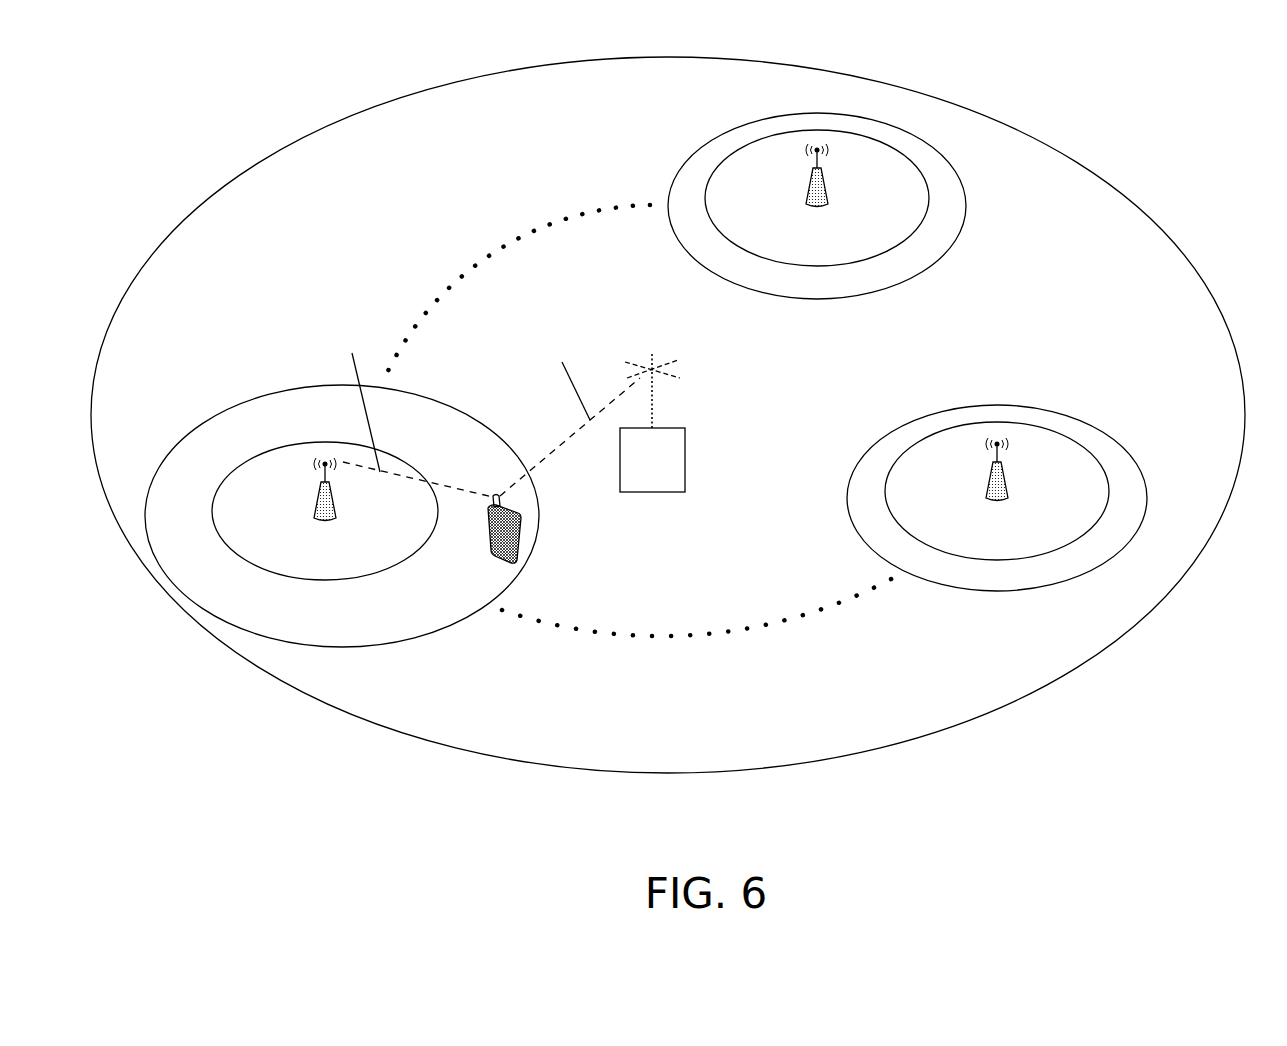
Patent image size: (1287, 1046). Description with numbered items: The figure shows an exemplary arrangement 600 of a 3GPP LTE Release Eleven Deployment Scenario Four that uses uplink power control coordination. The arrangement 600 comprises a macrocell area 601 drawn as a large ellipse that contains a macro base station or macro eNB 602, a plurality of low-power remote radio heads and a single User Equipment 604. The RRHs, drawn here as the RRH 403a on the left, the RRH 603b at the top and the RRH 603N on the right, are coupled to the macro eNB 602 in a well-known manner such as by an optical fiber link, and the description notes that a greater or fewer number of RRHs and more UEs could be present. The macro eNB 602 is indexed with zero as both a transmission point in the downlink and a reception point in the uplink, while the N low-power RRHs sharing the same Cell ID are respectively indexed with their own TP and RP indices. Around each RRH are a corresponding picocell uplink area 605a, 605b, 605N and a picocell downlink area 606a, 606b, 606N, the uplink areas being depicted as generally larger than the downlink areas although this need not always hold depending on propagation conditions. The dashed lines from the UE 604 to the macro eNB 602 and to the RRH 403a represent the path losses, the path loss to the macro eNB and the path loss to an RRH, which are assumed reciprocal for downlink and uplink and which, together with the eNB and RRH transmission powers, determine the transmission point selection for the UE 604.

The arrangement 600 is at (178, 86).
The macrocell area 601 is at (668, 415).
The macro base station 602 is at (669, 414).
The RRH 603b is at (837, 203).
The RRH 603N is at (1018, 495).
The remote radio head RRH 403a is at (340, 514).
The User Equipment 604 is at (520, 552).
The picocell uplink area 605a is at (342, 516).
The picocell uplink area 605b is at (817, 206).
The picocell uplink area 605N is at (997, 498).
The picocell downlink area 606a is at (325, 511).
The picocell downlink area 606b is at (817, 198).
The picocell downlink area 606N is at (997, 491).